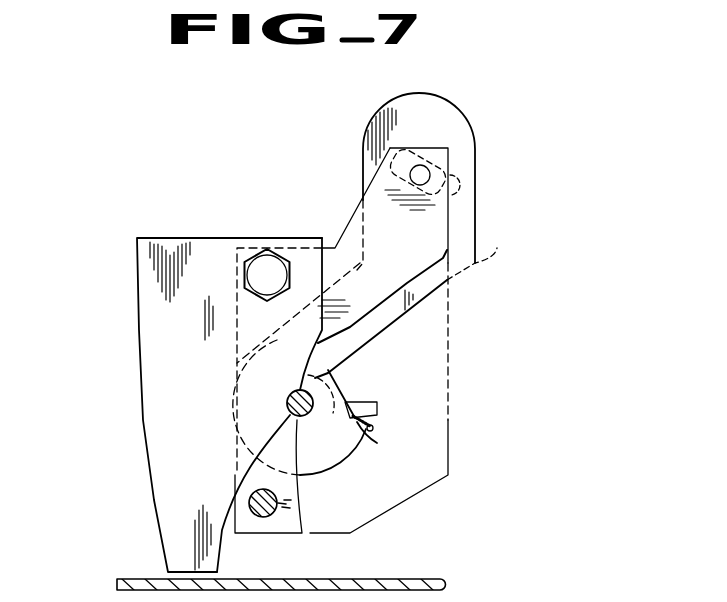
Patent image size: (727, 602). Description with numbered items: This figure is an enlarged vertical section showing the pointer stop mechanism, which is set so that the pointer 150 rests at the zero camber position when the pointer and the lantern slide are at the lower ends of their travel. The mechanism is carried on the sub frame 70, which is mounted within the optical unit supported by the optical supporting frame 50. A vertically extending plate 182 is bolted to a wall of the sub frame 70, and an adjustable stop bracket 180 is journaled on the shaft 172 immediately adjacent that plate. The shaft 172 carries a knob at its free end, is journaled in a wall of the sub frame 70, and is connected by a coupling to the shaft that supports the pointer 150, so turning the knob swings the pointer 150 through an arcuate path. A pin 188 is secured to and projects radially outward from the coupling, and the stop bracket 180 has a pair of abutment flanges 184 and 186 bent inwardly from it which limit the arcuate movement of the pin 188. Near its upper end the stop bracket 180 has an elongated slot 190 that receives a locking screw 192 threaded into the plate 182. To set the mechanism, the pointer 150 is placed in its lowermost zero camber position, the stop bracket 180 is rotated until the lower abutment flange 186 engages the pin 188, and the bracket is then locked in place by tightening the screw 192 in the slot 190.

The optical supporting frame 50 is at (137, 583).
The sub frame 70 is at (198, 342).
The pointer 150 is at (372, 423).
The shaft 172 is at (287, 402).
The adjustable stop bracket 180 is at (457, 120).
The vertically extending plate 182 is at (447, 253).
The abutment flange 184 is at (320, 372).
The lower abutment flange 186 is at (390, 444).
The pin 188 is at (352, 398).
The elongated slot 190 is at (457, 185).
The locking screw 192 is at (428, 170).